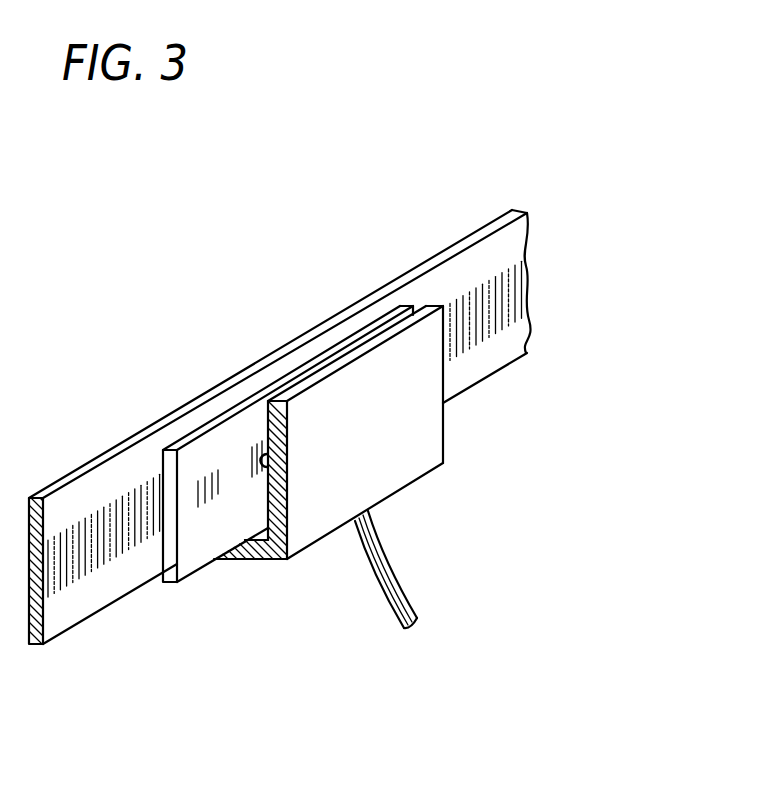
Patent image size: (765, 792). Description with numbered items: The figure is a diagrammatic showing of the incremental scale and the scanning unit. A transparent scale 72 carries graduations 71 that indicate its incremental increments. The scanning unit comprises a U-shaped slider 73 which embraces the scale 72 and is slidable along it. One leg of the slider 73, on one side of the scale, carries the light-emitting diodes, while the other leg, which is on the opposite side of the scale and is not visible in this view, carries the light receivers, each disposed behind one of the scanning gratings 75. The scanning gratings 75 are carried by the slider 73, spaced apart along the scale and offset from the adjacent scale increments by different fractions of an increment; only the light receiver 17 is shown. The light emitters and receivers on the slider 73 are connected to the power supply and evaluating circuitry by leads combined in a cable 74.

The light receiver 17 is at (265, 456).
The graduations 71 is at (83, 552).
The transparent scale 72 is at (65, 608).
The U-shaped slider 73 is at (375, 460).
The cable 74 is at (385, 567).
The scanning gratings 75 is at (215, 527).